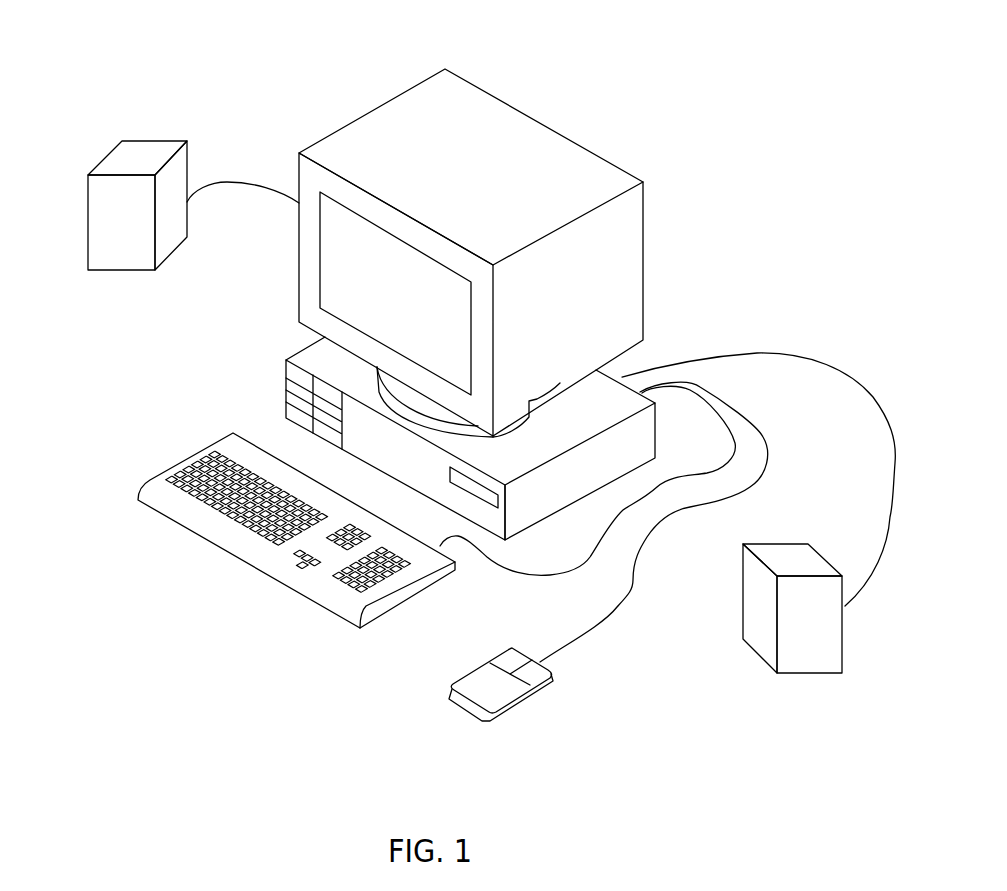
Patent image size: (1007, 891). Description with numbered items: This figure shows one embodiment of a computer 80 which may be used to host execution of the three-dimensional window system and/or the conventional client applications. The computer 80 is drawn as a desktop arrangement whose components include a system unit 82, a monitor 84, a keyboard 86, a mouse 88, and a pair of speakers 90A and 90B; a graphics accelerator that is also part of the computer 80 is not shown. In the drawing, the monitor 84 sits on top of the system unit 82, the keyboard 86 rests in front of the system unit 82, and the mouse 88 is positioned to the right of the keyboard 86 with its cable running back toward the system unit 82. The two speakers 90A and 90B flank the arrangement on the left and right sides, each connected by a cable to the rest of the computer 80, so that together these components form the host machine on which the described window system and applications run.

The computer 80 is at (150, 45).
The system unit 82 is at (302, 358).
The monitor 84 is at (528, 143).
The keyboard 86 is at (350, 608).
The mouse 88 is at (488, 698).
The speaker 90A is at (125, 268).
The speaker 90B is at (812, 668).